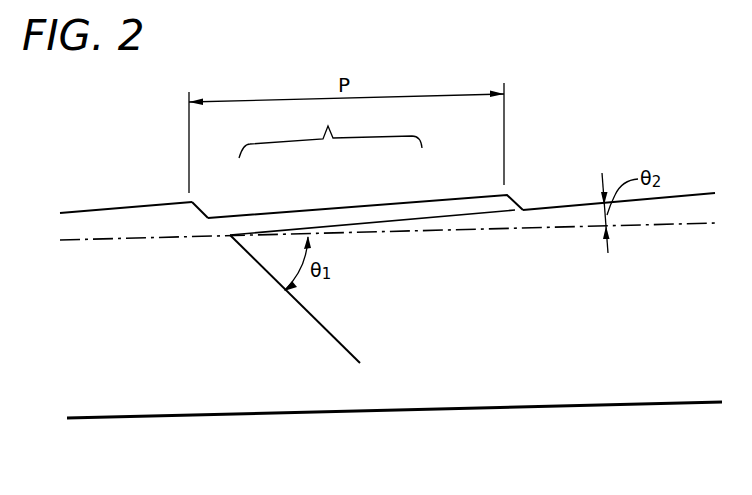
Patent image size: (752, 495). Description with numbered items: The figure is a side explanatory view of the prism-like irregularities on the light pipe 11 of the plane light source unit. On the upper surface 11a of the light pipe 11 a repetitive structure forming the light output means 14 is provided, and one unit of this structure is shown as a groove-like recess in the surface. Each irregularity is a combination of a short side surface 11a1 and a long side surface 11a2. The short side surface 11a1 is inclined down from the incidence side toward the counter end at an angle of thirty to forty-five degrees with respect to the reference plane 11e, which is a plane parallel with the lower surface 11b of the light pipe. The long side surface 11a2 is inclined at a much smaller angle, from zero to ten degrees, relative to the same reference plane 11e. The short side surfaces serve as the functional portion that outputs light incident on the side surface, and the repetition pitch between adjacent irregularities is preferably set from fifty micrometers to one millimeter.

The light pipe 11 is at (643, 362).
The upper surface of the light pipe 11a is at (150, 203).
The short side surface 11a1 is at (200, 209).
The long side surface 11a2 is at (353, 205).
The lower surface 11b is at (527, 407).
The reference plane 11e is at (480, 230).
The light output means 14 is at (327, 120).